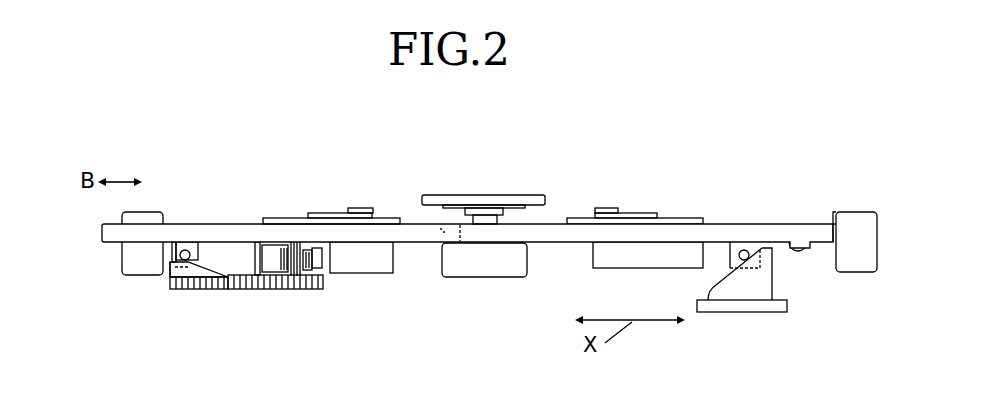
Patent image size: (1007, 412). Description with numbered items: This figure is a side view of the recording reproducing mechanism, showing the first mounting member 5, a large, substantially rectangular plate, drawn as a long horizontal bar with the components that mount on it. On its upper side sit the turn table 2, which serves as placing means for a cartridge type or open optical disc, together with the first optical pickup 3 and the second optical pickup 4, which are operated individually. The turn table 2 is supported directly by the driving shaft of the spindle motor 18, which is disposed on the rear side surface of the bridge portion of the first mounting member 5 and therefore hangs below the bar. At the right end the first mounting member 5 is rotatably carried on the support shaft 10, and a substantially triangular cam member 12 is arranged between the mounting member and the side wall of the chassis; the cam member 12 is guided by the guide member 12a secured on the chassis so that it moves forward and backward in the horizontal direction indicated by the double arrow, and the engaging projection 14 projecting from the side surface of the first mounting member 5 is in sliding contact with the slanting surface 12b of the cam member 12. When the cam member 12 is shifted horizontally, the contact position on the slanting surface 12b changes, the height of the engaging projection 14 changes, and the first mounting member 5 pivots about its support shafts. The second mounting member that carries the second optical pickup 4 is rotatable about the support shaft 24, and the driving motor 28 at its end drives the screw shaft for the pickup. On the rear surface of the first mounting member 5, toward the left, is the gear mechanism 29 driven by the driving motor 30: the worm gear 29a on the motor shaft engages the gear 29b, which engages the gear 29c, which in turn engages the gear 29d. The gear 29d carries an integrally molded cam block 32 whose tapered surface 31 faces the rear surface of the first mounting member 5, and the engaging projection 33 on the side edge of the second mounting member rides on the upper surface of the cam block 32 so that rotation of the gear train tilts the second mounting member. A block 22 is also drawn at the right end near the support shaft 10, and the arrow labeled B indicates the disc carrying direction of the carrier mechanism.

The turn table 2 is at (450, 195).
The first optical pickup 3 is at (634, 215).
The second optical pickup 4 is at (357, 207).
The first mounting member 5 is at (722, 230).
The support shaft 10 is at (800, 252).
The cam member 12 is at (724, 307).
The guide member 12a is at (777, 311).
The slanting surface 12b is at (713, 281).
The engaging projection 14 is at (748, 251).
The spindle motor 18 is at (470, 265).
The block 22 is at (856, 215).
The support shaft 24 is at (438, 236).
The driving motor 28 is at (147, 216).
The gear mechanism 29 is at (246, 312).
The worm gear 29a is at (330, 293).
The gear 29b is at (300, 285).
The gear 29c is at (248, 285).
The gear 29d is at (190, 287).
The driving motor 30 is at (372, 267).
The tapered surface 31 is at (210, 268).
The cam block 32 is at (172, 264).
The engaging projection 33 is at (186, 249).